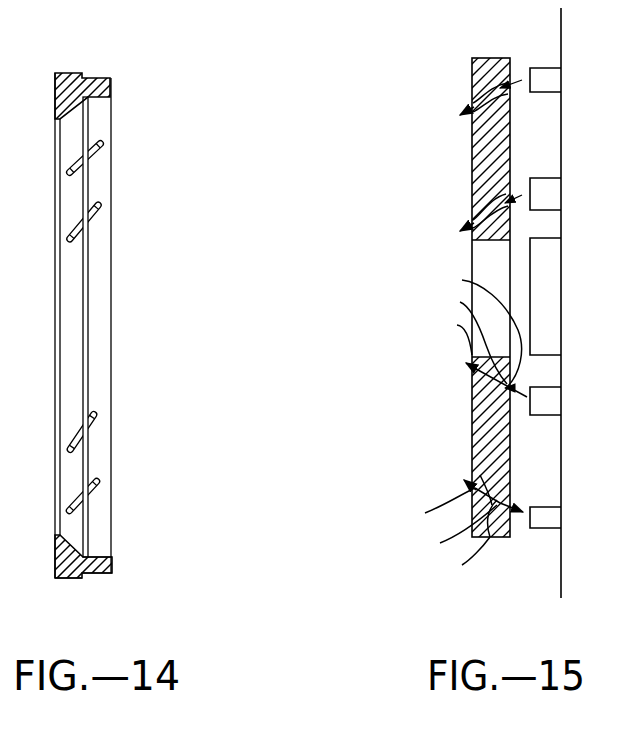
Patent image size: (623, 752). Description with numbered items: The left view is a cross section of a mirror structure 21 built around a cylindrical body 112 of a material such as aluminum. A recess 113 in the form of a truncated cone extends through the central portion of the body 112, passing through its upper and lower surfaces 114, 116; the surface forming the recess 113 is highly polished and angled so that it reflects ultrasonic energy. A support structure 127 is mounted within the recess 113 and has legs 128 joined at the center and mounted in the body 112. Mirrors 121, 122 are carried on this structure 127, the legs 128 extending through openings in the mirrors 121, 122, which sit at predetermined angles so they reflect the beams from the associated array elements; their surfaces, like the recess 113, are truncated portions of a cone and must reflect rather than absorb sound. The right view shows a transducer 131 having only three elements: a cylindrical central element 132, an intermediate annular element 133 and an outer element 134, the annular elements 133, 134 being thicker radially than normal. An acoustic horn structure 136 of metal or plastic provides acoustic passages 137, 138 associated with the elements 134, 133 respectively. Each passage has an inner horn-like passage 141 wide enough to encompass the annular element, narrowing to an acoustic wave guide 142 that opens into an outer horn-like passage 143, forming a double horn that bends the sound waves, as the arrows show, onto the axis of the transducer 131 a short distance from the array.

In FIG. 14, the lamp assembly 21 is at (30, 325).
In FIG. 14, the body 112 is at (67, 562).
In FIG. 14, the recess 113 is at (90, 563).
In FIG. 14, the upper surface 114 is at (54, 568).
In FIG. 14, the lower surface 116 is at (113, 572).
In FIG. 14, the mirror 121 is at (95, 507).
In FIG. 14, the mirror 122 is at (95, 443).
In FIG. 14, the support structure 127 is at (95, 263).
In FIG. 14, the legs 128 is at (88, 317).
In FIG. 15, the transducer 131 is at (530, 612).
In FIG. 15, the central element 132 is at (558, 280).
In FIG. 15, the intermediate annular element 133 is at (558, 398).
In FIG. 15, the outer element 134 is at (558, 517).
In FIG. 15, the acoustic horn structure 136 is at (470, 435).
In FIG. 15, the acoustic passage 137 is at (438, 492).
In FIG. 15, the acoustic passage 138 is at (455, 374).
In FIG. 15, the inner horn-like passage 141 is at (473, 422).
In FIG. 15, the acoustic wave guide 142 is at (456, 420).
In FIG. 15, the outer horn-like passage 143 is at (458, 426).